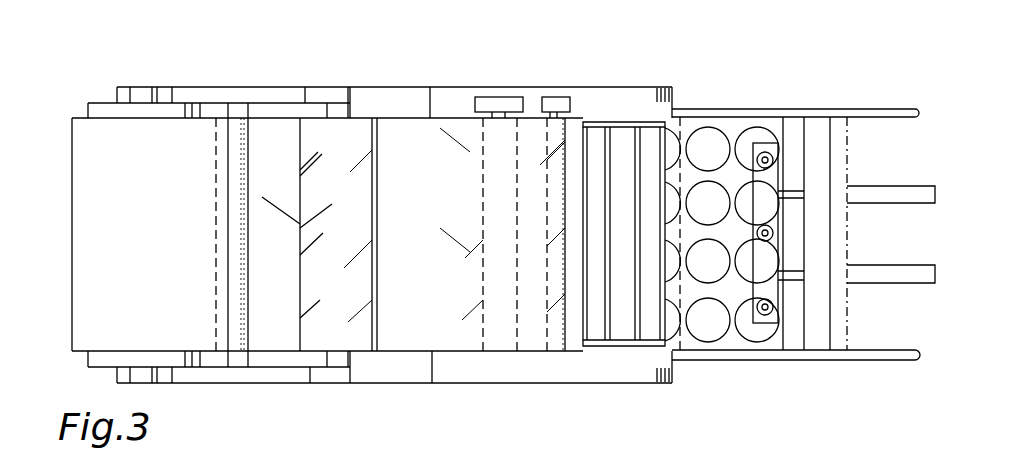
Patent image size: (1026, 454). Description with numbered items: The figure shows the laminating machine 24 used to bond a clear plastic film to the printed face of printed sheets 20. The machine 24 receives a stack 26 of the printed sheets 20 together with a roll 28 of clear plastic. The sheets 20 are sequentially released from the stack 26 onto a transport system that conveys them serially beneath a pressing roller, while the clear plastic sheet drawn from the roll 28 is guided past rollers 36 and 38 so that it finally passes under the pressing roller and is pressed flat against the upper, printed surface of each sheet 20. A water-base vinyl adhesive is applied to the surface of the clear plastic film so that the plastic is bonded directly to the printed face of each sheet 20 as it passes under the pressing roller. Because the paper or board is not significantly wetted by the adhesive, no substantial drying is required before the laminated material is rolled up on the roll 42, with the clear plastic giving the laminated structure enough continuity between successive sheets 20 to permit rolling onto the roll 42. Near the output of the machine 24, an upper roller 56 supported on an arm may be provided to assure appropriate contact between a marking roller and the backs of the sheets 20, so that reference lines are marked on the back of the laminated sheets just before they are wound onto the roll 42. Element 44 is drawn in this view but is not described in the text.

The printed sheets 20 is at (733, 127).
The laminating machine 24 is at (420, 86).
The stack 26 is at (808, 112).
The roll 28 is at (312, 125).
The roller 36 is at (484, 136).
The roller 38 is at (560, 130).
The roll 42 is at (83, 200).
The mounting plate 44 is at (740, 300).
The upper roller 56 is at (232, 103).